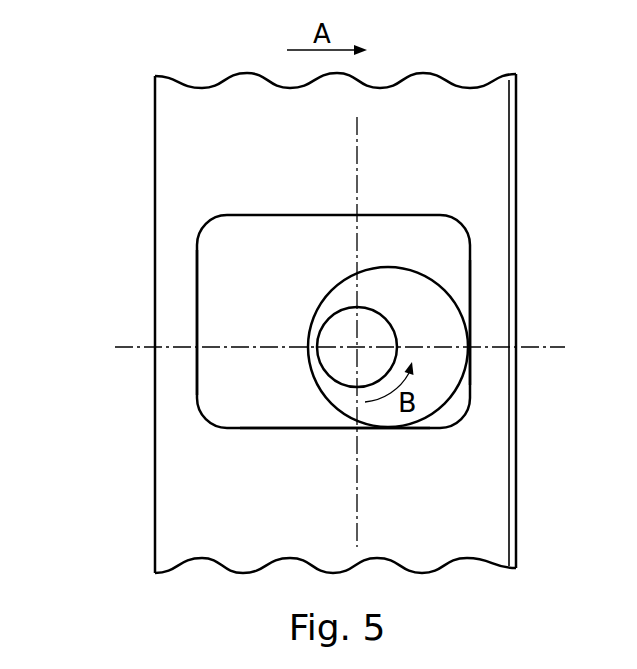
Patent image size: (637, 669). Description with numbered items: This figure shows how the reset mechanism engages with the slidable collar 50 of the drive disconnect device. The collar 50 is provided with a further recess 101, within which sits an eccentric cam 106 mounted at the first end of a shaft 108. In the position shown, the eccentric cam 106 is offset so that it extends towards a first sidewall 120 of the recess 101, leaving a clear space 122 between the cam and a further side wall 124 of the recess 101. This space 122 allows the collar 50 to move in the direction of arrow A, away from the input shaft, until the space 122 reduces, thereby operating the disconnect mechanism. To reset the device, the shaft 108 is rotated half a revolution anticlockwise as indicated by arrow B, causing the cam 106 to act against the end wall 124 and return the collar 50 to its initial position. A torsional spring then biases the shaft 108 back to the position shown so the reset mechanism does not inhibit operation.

The collar 50 is at (190, 503).
The recess 101 is at (440, 430).
The eccentric cam 106 is at (447, 334).
The shaft 108 is at (371, 318).
The first sidewall 120 is at (472, 380).
The clear space 122 is at (230, 414).
The further side wall 124 is at (198, 378).